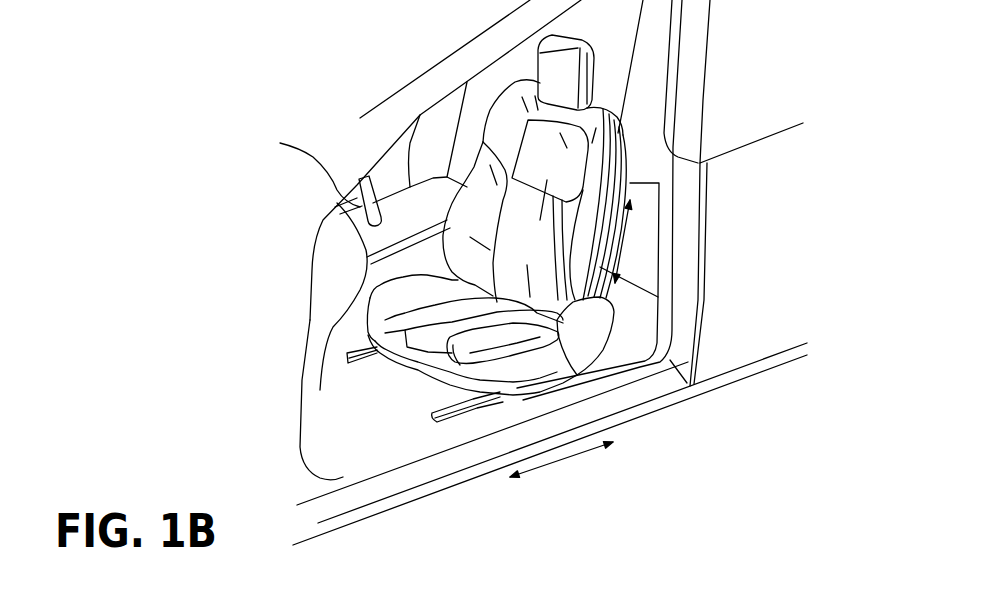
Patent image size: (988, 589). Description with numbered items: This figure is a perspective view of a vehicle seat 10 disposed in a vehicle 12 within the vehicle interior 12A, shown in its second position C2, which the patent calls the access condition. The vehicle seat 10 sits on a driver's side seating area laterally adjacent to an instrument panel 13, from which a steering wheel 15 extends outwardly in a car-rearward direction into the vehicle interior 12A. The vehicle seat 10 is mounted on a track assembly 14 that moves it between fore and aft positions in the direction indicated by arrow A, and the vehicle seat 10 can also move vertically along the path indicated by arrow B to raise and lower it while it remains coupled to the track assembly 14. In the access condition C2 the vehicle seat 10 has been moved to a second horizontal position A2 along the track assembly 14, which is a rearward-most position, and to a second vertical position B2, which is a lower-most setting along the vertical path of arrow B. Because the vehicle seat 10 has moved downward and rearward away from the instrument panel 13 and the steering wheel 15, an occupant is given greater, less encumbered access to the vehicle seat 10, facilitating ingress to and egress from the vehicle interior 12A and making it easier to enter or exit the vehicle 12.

The vehicle seat 10 is at (547, 296).
The second position (access condition) C2 is at (547, 296).
The vehicle 12 is at (420, 93).
The vehicle interior 12A is at (375, 402).
The instrument panel 13 is at (333, 262).
The track assembly 14 is at (468, 417).
The steering wheel 15 is at (370, 210).
The second horizontal position A2 is at (553, 376).
The second vertical position B2 is at (559, 363).
The arrow A (fore and aft direction) A is at (560, 458).
The arrow B (vertical path) B is at (623, 223).